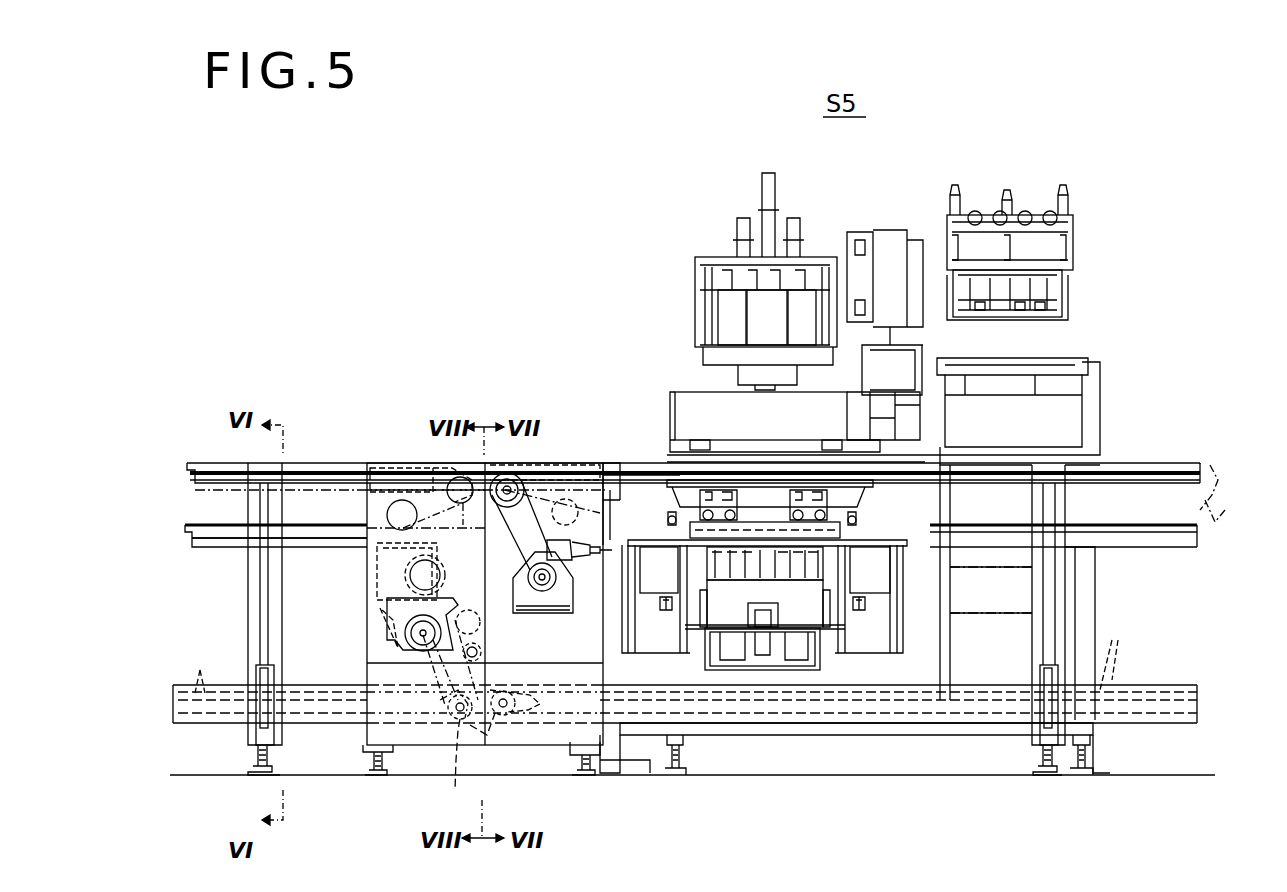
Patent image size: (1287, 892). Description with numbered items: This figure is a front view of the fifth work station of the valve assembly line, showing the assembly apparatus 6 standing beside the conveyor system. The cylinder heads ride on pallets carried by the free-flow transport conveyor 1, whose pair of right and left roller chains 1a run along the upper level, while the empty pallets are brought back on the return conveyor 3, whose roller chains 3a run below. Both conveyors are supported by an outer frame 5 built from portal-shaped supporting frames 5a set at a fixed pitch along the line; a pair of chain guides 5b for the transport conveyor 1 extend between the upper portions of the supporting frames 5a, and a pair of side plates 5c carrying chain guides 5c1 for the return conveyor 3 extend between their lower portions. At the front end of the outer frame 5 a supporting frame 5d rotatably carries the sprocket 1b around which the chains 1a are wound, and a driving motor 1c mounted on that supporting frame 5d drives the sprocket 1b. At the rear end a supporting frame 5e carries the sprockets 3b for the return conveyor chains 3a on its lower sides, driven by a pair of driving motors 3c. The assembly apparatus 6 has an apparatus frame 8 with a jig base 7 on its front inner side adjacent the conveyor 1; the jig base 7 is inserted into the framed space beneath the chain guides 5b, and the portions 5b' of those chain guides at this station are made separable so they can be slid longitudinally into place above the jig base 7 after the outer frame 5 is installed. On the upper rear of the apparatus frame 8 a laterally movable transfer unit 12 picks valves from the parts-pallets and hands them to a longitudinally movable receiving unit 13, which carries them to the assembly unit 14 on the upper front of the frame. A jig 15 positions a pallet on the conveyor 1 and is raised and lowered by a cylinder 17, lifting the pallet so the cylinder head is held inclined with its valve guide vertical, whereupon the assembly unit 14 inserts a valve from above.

The transport conveyor 1 is at (1172, 460).
The roller chains 1a is at (1220, 493).
The sprocket 1b is at (425, 560).
The driving motor 1c is at (540, 592).
The return conveyor 3 is at (1159, 685).
The roller chains 3a is at (306, 710).
The sprockets 3b is at (481, 716).
The driving motors 3c is at (396, 612).
The outer frame 5 is at (233, 464).
The supporting frames 5a is at (1060, 584).
The chain guides 5b is at (590, 475).
The separable portions of chain guides 5b' is at (641, 456).
The side plates 5c is at (236, 713).
The chain guides 5c1 is at (661, 654).
The supporting frame 5d is at (532, 466).
The supporting frame 5e is at (445, 466).
The assembly apparatus 6 is at (1076, 193).
The jig base 7 is at (905, 547).
The apparatus frame 8 is at (1090, 408).
The transfer unit 12 is at (1062, 290).
The receiving unit 13 is at (703, 400).
The assembly unit 14 is at (700, 315).
The jig 15 is at (858, 508).
The cylinder 17 is at (663, 612).